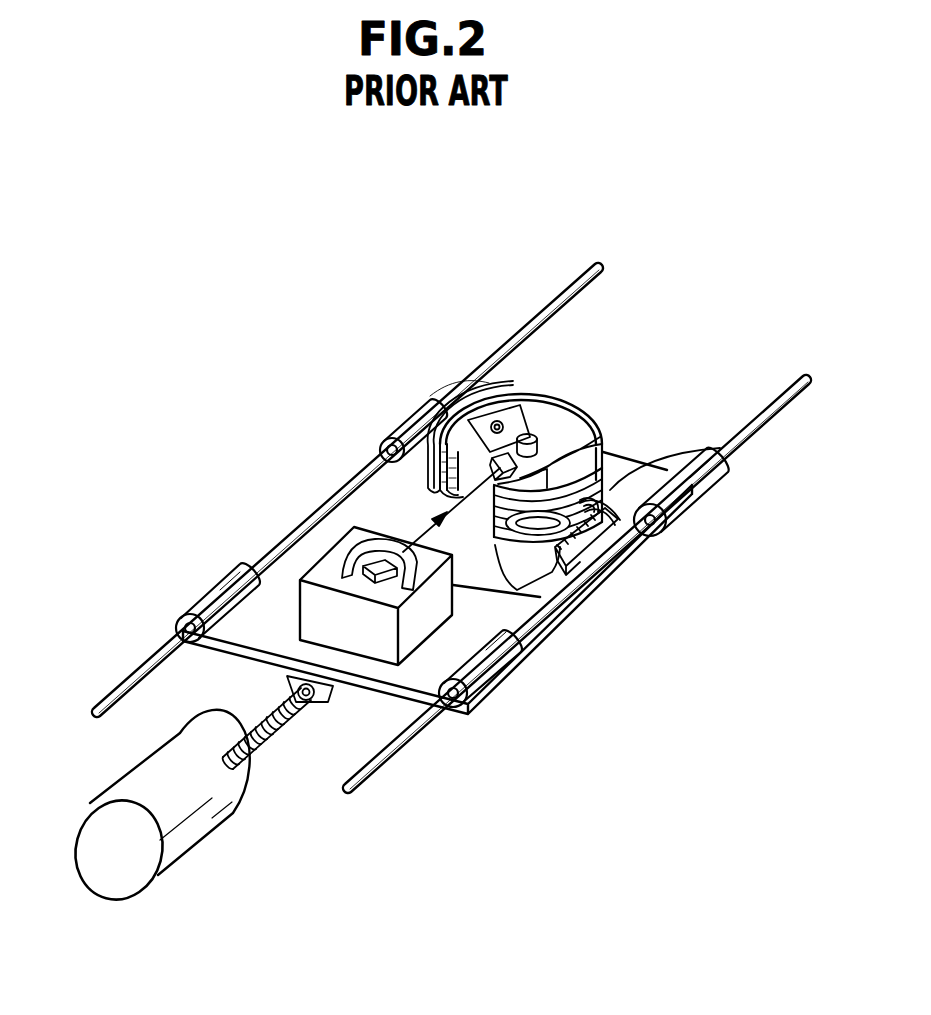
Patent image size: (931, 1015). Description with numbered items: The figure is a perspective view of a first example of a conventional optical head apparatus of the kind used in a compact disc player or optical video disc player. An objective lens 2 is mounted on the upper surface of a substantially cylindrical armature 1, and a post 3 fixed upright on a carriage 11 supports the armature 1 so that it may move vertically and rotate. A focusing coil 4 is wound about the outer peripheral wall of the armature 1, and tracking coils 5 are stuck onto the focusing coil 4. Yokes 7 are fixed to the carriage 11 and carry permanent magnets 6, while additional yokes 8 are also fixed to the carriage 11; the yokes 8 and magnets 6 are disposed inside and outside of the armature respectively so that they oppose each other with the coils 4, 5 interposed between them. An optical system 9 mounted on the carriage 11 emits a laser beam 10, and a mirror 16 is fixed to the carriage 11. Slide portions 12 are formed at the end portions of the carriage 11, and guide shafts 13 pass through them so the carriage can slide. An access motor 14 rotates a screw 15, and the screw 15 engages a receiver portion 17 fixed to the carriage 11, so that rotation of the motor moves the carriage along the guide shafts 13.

The armature 1 is at (602, 437).
The objective lens 2 is at (462, 388).
The post 3 is at (513, 400).
The focusing coil 4 is at (503, 540).
The tracking coils 5 is at (742, 455).
The permanent magnets 6 is at (437, 393).
The yokes 7 is at (390, 425).
The additional yokes 8 is at (490, 394).
The optical system 9 is at (300, 540).
The laser beam 10 is at (423, 530).
The carriage 11 is at (415, 678).
The slide portions 12 is at (208, 607).
The guide shafts 13 is at (147, 667).
The access motor 14 is at (193, 842).
The screw 15 is at (240, 732).
The mirror 16 is at (450, 473).
The receiver portion 17 is at (328, 700).